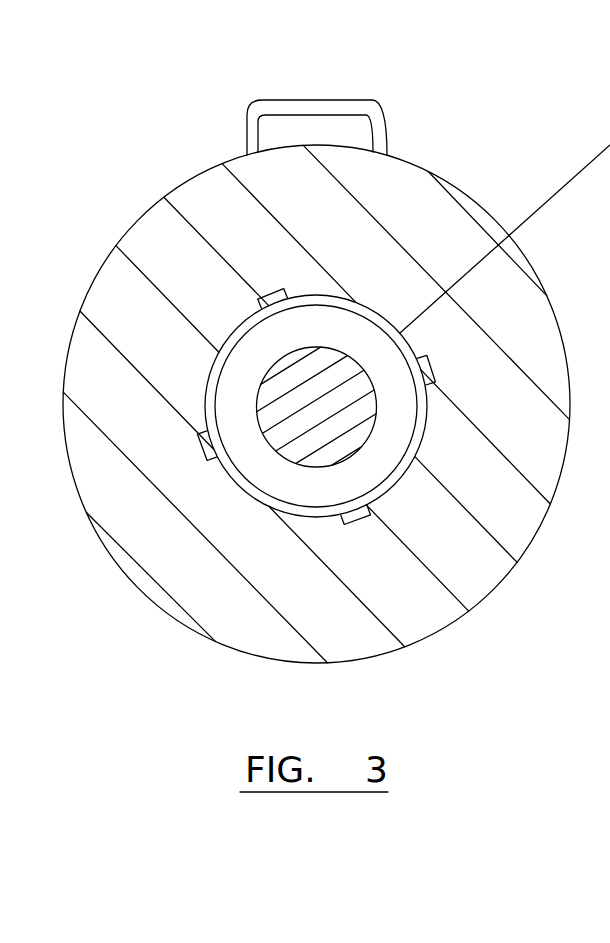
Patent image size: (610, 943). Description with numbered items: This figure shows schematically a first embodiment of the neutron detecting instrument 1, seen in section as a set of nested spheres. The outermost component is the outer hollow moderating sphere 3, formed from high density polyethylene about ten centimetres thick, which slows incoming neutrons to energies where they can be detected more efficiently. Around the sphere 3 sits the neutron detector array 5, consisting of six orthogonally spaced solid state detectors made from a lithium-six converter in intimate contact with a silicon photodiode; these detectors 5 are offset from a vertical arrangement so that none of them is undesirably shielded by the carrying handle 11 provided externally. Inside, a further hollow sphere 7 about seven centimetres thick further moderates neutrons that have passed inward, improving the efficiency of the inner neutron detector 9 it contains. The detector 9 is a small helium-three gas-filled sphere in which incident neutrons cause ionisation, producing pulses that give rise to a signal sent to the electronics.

The container body 1 is at (336, 404).
The outer hollow moderating sphere 3 is at (217, 353).
The neutron detector array 5 is at (267, 290).
The further hollow sphere 7 is at (242, 375).
The inner neutron detector 9 is at (358, 357).
The carrying handle 11 is at (357, 105).